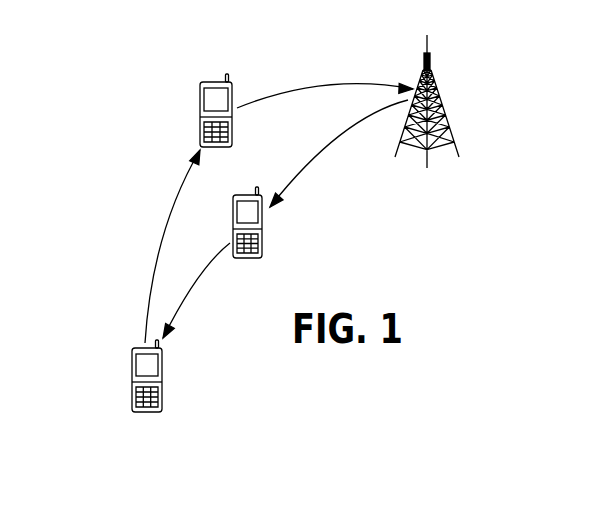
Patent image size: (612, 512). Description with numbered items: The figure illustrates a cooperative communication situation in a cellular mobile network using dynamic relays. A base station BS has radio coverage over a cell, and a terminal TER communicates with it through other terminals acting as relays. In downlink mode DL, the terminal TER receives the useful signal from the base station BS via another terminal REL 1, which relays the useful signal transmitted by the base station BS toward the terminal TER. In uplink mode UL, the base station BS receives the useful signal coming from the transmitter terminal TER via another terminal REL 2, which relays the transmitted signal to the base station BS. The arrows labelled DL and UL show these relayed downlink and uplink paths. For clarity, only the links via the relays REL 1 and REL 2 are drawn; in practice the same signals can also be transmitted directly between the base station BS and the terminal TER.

The relay terminal REL 2 is at (212, 82).
The relay terminal REL 1 is at (263, 237).
The terminal TER is at (165, 395).
The base station BS is at (440, 109).
The uplink mode UL is at (170, 212).
The downlink mode DL is at (339, 141).